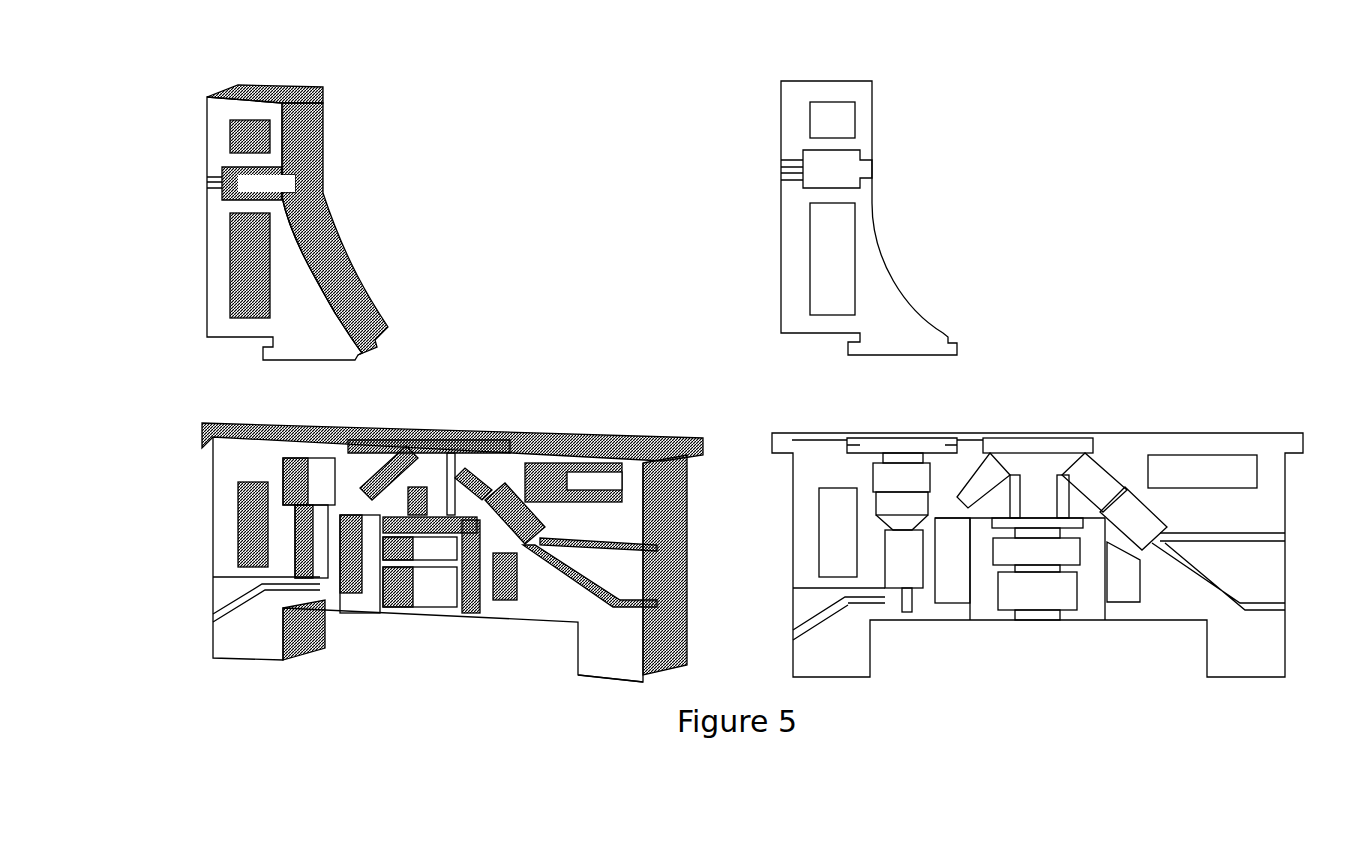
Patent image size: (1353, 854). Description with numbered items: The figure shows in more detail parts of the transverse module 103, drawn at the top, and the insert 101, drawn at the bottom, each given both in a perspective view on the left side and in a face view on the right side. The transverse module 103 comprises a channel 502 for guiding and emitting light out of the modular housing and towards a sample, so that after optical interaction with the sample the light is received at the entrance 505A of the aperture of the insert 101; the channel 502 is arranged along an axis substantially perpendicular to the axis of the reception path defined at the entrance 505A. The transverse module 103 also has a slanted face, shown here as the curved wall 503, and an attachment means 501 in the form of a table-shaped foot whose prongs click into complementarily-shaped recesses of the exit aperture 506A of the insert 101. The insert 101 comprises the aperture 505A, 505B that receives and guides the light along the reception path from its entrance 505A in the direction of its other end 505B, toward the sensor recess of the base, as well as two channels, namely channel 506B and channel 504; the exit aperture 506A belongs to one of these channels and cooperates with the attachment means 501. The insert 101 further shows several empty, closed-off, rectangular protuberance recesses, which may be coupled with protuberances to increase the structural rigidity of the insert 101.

The insert 101 is at (773, 405).
The transverse module 103 is at (733, 152).
The attachment means 501 is at (358, 357).
The channel 502 is at (257, 178).
The curved wall 503 is at (338, 278).
The channel 504 is at (1142, 485).
The entrance of the aperture 505A is at (1037, 433).
The end of the aperture 505B is at (1038, 433).
The exit aperture 506A is at (918, 432).
The channel 506B is at (896, 575).